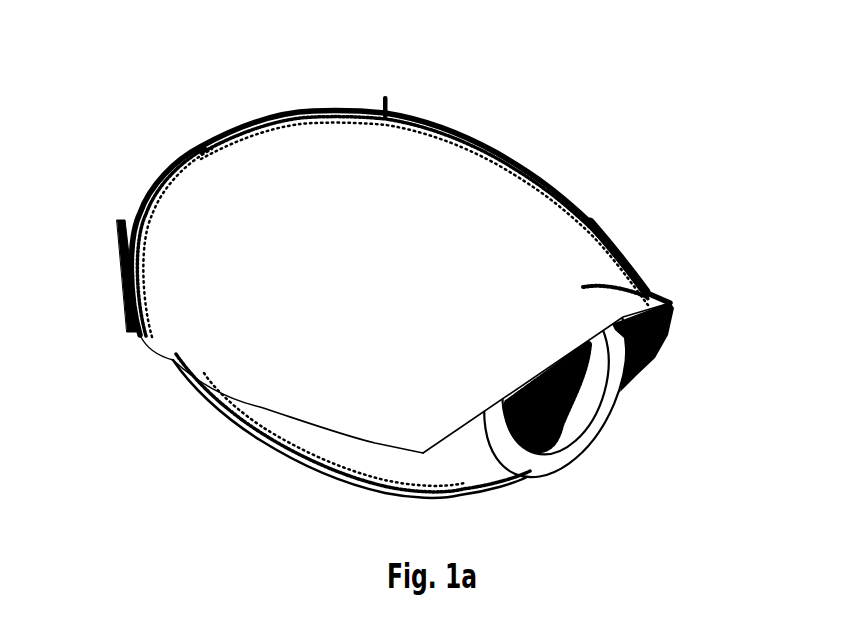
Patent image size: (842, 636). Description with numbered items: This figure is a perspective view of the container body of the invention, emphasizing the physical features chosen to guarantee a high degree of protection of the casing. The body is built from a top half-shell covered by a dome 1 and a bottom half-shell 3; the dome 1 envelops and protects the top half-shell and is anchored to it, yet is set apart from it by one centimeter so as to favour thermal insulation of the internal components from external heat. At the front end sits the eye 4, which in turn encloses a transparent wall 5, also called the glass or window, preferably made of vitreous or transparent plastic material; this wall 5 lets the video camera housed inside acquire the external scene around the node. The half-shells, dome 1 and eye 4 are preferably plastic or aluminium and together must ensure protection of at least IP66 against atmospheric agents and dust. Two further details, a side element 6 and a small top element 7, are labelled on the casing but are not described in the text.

The dome 1 is at (443, 217).
The bottom half-shell 3 is at (307, 443).
The eye 4 is at (570, 410).
The transparent wall 5 is at (615, 380).
The side bar 6 is at (117, 280).
The top projection 7 is at (382, 107).